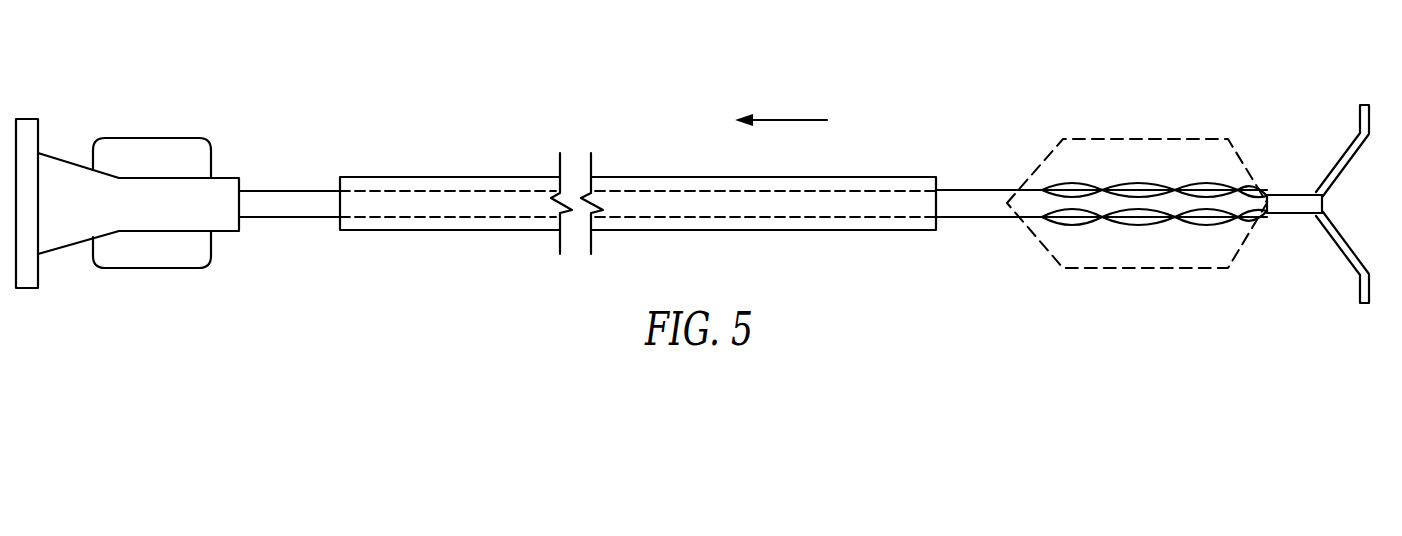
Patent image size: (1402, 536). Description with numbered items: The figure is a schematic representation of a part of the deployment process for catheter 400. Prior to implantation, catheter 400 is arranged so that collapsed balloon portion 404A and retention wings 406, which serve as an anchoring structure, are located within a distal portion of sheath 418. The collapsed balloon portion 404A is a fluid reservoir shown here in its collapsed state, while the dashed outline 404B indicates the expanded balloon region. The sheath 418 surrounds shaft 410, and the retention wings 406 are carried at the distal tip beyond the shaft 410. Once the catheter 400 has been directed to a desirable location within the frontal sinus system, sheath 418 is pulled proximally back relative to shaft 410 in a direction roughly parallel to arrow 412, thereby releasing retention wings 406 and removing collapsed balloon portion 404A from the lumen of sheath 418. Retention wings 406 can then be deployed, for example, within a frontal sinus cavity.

The catheter 400 is at (180, 60).
The sheath 418 is at (782, 177).
The direction 412 is at (782, 117).
The shaft 410 is at (972, 188).
The expanded configuration envelope 404B is at (1145, 139).
The collapsed balloon portion 404A is at (1140, 224).
The retention wings 406 is at (1348, 237).